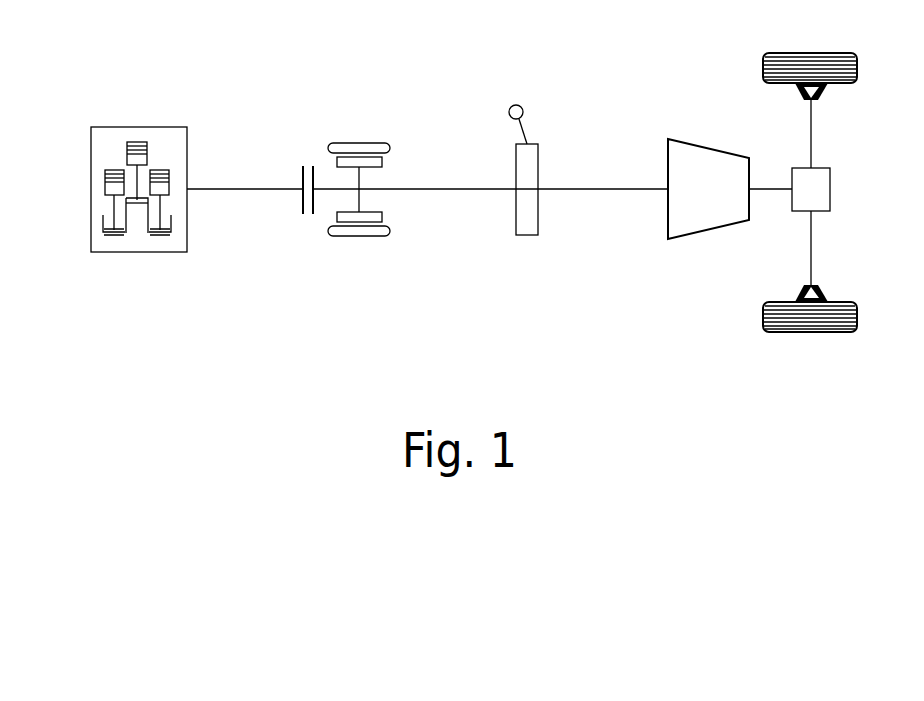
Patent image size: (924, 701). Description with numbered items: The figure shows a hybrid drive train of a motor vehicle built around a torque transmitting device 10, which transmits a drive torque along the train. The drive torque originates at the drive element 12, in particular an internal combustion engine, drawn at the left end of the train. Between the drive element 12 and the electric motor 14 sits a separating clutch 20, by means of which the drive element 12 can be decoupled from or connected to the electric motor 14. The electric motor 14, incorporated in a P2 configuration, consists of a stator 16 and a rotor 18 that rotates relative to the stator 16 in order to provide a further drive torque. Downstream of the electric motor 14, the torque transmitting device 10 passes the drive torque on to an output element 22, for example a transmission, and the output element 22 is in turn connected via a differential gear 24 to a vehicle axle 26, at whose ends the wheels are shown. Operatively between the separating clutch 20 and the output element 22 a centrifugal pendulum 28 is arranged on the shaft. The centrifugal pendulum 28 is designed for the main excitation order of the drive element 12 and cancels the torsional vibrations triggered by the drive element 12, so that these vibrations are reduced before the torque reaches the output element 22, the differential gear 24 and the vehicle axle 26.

The torque transmitting device 10 is at (409, 97).
The drive element 12 is at (155, 124).
The electric motor 14 is at (384, 153).
The stator 16 is at (362, 143).
The rotor 18 is at (382, 160).
The separating clutch 20 is at (292, 176).
The output element 22 is at (683, 132).
The differential gear 24 is at (822, 175).
The vehicle axle 26 is at (814, 124).
The centrifugal pendulum 28 is at (530, 120).